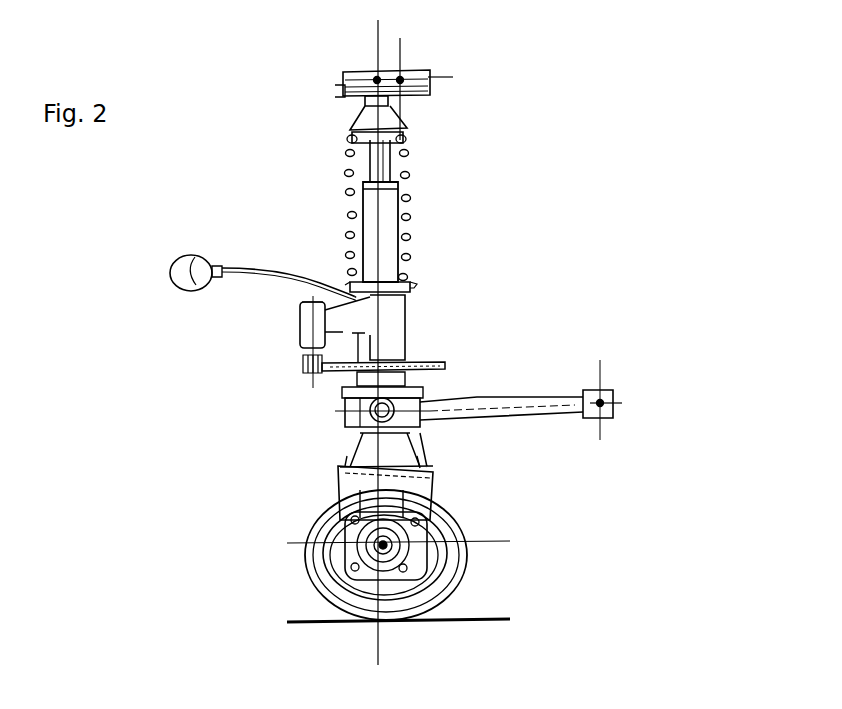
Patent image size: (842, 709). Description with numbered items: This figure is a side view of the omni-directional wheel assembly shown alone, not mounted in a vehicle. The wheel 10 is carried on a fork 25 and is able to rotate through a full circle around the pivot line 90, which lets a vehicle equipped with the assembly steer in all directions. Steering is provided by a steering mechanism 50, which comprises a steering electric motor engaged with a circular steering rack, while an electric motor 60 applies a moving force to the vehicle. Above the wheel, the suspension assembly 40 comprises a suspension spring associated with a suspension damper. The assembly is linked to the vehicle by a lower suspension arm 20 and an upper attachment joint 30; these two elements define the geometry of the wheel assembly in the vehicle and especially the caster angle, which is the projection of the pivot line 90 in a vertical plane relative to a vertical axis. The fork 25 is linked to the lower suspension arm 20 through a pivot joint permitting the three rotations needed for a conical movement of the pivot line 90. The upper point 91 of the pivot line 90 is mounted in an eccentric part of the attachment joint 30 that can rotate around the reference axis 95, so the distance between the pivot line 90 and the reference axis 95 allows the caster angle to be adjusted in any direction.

The wheel 10 is at (452, 565).
The lower suspension arm 20 is at (538, 417).
The fork 25 is at (340, 477).
The upper attachment joint 30 is at (427, 92).
The suspension assembly 40 is at (345, 172).
The steering mechanism 50 is at (302, 340).
The electric motor 60 is at (348, 560).
The pivot line 90 is at (377, 40).
The upper point 91 is at (377, 88).
The reference axis 95 is at (400, 38).